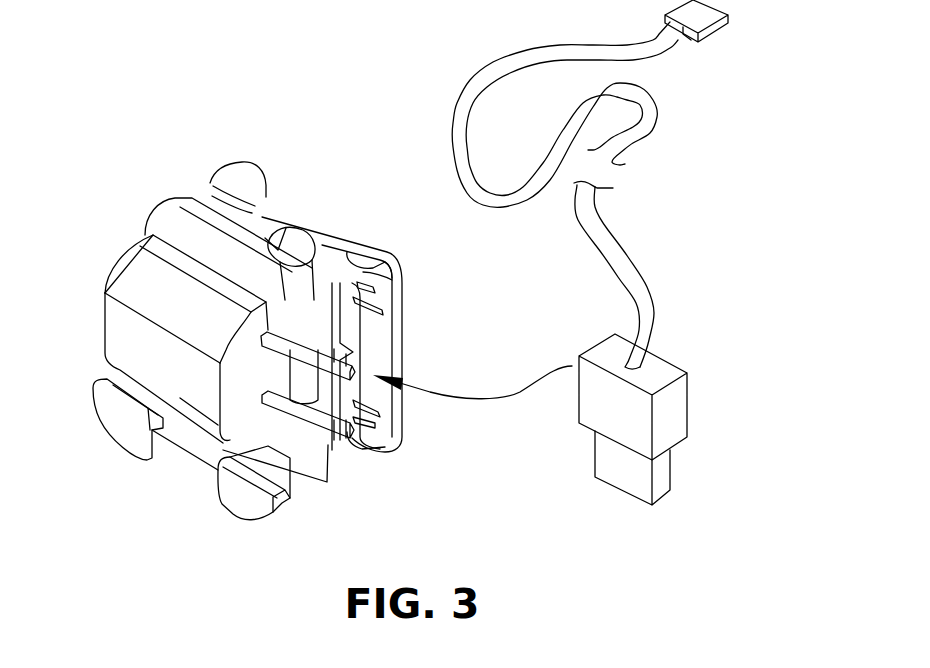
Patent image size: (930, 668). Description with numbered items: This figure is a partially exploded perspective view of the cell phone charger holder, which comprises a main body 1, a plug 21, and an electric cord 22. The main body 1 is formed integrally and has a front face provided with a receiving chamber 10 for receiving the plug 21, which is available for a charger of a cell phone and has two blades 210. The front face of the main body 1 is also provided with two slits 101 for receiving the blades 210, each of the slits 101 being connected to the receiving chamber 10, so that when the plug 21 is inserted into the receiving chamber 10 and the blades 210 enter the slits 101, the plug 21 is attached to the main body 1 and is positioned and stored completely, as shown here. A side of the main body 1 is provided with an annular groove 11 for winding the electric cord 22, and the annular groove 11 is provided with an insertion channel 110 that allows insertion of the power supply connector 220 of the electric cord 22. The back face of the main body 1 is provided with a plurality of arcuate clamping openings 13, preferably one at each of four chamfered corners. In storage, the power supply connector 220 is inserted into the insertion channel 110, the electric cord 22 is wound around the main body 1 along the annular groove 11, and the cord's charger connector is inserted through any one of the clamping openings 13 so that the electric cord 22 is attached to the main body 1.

The main body 1 is at (156, 191).
The receiving chamber 10 is at (230, 440).
The annular groove 11 is at (250, 227).
The arcuate clamping openings 13 is at (367, 266).
The plug 21 is at (127, 277).
The electric cord 22 is at (661, 268).
The slits 101 is at (336, 340).
The insertion channel 110 is at (370, 315).
The blades 210 is at (280, 347).
The power supply connector 220 is at (595, 452).